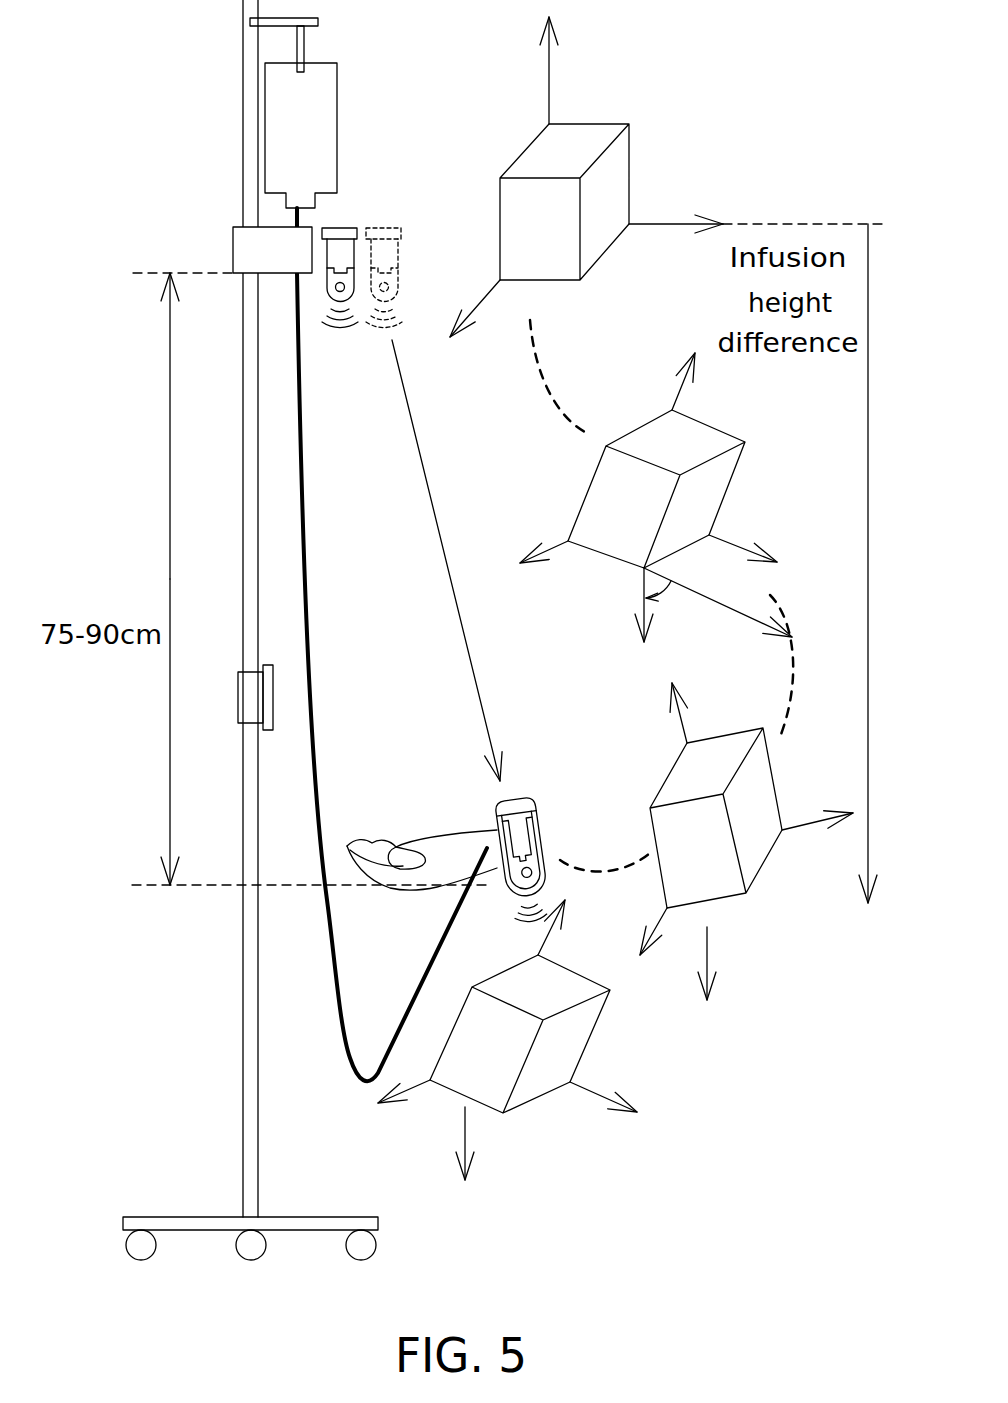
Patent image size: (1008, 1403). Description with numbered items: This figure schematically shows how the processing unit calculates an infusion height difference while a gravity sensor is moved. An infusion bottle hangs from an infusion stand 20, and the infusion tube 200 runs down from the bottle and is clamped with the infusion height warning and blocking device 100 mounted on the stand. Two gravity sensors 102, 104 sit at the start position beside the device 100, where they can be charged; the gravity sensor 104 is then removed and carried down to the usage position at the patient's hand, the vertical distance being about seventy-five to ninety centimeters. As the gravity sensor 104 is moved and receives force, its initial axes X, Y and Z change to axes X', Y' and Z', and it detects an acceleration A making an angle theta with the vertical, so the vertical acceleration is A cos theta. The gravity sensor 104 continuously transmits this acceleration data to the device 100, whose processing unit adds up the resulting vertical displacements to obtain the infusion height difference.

The infusion stand 20 is at (248, 983).
The infusion height warning and blocking device 100 is at (233, 250).
The gravity sensor 102 is at (342, 228).
The gravity sensor 104 is at (382, 228).
The infusion tube 200 is at (332, 950).